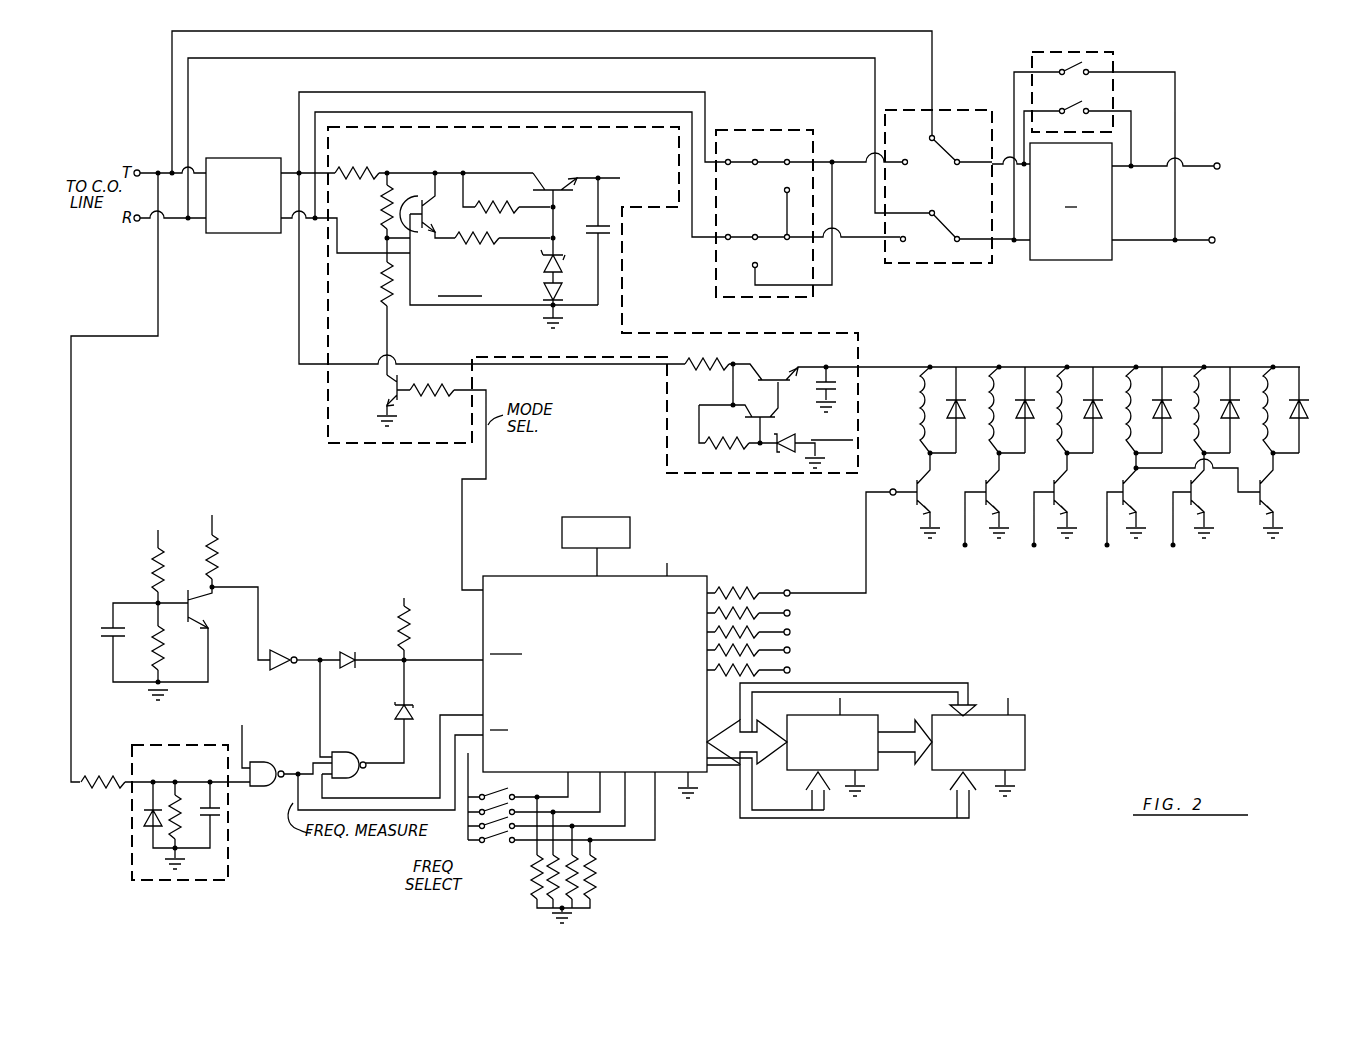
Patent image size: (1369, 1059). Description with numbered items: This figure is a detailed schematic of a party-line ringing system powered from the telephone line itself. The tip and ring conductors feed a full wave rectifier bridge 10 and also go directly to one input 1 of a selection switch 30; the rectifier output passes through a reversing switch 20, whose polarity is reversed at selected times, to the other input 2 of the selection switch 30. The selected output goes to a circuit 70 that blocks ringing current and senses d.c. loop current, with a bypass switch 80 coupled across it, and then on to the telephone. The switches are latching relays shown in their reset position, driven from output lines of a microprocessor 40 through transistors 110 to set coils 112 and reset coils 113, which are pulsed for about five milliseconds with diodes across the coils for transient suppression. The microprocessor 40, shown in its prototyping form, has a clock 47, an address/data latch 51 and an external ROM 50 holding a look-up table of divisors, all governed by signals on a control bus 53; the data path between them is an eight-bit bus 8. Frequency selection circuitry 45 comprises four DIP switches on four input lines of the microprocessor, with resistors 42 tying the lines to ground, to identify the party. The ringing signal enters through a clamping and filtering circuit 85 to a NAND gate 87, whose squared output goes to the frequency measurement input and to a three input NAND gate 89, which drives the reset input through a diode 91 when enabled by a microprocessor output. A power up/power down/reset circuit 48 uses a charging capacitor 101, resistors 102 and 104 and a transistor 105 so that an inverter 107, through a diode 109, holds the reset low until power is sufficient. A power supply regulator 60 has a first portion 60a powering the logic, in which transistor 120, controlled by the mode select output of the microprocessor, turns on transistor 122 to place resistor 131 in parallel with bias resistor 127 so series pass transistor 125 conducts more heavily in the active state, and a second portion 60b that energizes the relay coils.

The full wave rectifier bridge 10 is at (245, 233).
The reversing switch 20 is at (765, 130).
The selection switch 30 is at (954, 112).
The bypass switch 80 is at (1110, 53).
The ringing current blocking and d.c. loop current sensing circuit 70 is at (1090, 260).
The power supply regulator 60 is at (440, 443).
The first portion of power supply regulator 60a is at (520, 273).
The second portion of power supply regulator 60b is at (769, 413).
The series pass transistor 125 is at (553, 185).
The resistor 131 is at (470, 234).
The bias resistor 127 is at (492, 207).
The transistor 122 is at (417, 228).
The transistor 120 is at (402, 402).
The set coil 112 is at (912, 383).
The reset coil 113 is at (986, 450).
The transistor 110 is at (932, 497).
The clock 47 is at (625, 524).
The microprocessor 40 is at (483, 640).
The power up/power down/reset circuit 48 is at (331, 656).
The inverter 107 is at (278, 653).
The diode 109 is at (340, 653).
The diode 91 is at (398, 712).
The three input NAND gate 89 is at (344, 754).
The NAND gate 87 is at (260, 762).
The clamping and filtering circuit 85 is at (228, 850).
The resistor 102 is at (150, 569).
The resistor 104 is at (162, 645).
The transistor 105 is at (206, 606).
The charging capacitor 101 is at (102, 630).
The frequency selection switching circuit 45 is at (521, 864).
The resistors 42 is at (606, 877).
The 8-bit data bus 8 is at (760, 755).
The address/data latch 51 is at (878, 716).
The ROM 50 is at (1025, 723).
The control bus 53 is at (845, 818).
The input of selection switch 1 is at (932, 85).
The input of selection switch 2 is at (853, 165).